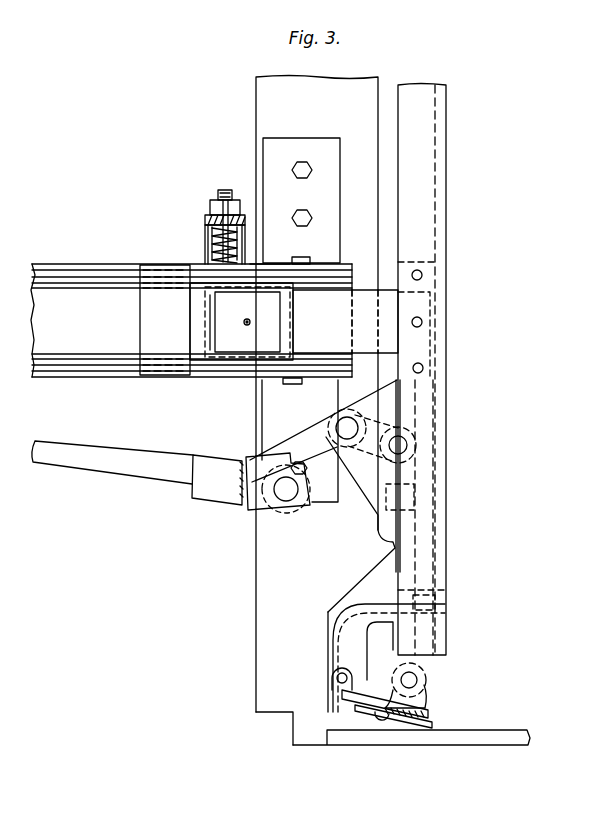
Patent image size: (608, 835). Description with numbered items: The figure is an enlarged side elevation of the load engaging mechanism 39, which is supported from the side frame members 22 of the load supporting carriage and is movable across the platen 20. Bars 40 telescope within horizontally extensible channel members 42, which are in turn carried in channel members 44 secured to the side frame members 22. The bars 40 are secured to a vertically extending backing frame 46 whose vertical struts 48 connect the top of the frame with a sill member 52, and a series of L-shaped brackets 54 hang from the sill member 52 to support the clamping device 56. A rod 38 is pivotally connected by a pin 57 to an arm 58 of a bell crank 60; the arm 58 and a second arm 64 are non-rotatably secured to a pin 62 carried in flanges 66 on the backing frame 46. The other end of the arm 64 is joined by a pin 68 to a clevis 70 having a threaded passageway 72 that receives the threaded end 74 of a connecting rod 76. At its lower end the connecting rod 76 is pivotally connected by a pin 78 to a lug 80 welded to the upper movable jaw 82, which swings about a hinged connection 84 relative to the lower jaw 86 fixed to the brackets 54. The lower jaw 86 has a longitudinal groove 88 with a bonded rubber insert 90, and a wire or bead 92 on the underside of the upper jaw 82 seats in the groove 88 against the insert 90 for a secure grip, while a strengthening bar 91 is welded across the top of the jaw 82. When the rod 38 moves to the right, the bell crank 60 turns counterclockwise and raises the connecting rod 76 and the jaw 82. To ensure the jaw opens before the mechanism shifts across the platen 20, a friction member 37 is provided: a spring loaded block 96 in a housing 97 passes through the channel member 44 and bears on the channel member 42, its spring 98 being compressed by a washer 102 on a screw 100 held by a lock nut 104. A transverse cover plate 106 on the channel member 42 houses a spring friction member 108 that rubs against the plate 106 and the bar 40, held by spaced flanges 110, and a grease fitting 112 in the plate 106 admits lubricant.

The platen 20 is at (532, 737).
The side frame member 22 is at (265, 572).
The friction member 37 is at (150, 241).
The rod 38 is at (118, 470).
The load engaging mechanism 39 is at (515, 278).
The bar 40 is at (361, 296).
The channel member 42 is at (313, 283).
The channel member 44 is at (273, 272).
The backing frame 46 is at (452, 190).
The vertical strut 48 is at (437, 232).
The sill member 52 is at (447, 590).
The L-shaped bracket 54 is at (328, 628).
The clamping device 56 is at (440, 723).
The pin 57 is at (264, 500).
The arm 58 is at (320, 485).
The bell crank 60 is at (297, 433).
The pin 62 is at (345, 426).
The arm 64 is at (398, 412).
The flange 66 is at (345, 487).
The pin 68 is at (428, 440).
The clevis 70 is at (420, 470).
The threaded passageway 72 is at (415, 497).
The threaded end 74 is at (416, 525).
The connecting rod 76 is at (410, 555).
The pin 78 is at (417, 680).
The lug 80 is at (427, 701).
The upper movable jaw 82 is at (340, 697).
The hinged connection 84 is at (340, 672).
The lower jaw 86 is at (365, 717).
The groove 88 is at (395, 718).
The rubber insert 90 is at (385, 722).
The strengthening bar 91 is at (395, 678).
The wire or bead 92 is at (395, 685).
The spring loaded block 96 is at (207, 263).
The housing 97 is at (246, 232).
The spring 98 is at (211, 240).
The screw 100 is at (219, 197).
The washer 102 is at (208, 215).
The lock nut 104 is at (240, 218).
The cover plate 106 is at (293, 313).
The spring friction member 108 is at (292, 340).
The flange 110 is at (285, 305).
The grease fitting 112 is at (246, 328).